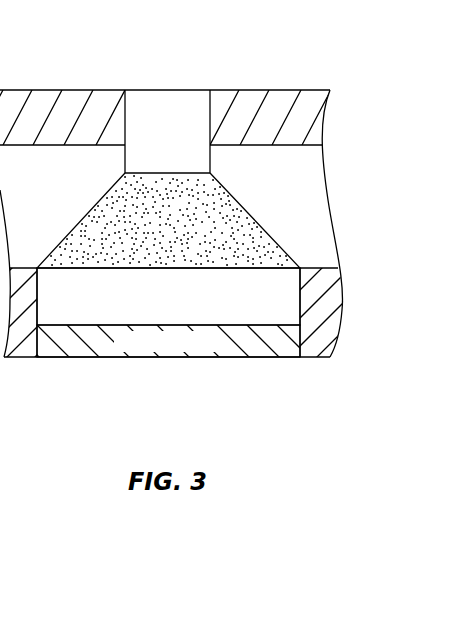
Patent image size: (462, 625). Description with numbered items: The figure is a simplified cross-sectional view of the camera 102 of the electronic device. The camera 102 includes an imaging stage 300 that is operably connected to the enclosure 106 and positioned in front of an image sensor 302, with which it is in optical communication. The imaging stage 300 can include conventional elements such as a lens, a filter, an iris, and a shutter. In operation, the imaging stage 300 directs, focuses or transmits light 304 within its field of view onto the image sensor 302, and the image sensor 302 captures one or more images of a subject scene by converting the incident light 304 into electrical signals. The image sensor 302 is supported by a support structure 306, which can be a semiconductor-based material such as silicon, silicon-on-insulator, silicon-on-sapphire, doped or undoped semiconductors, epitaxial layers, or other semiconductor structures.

The camera 102 is at (291, 59).
The enclosure 106 is at (323, 115).
The imaging stage 300 is at (167, 97).
The light 304 is at (245, 220).
The image sensor 302 is at (255, 318).
The support structure 306 is at (78, 350).